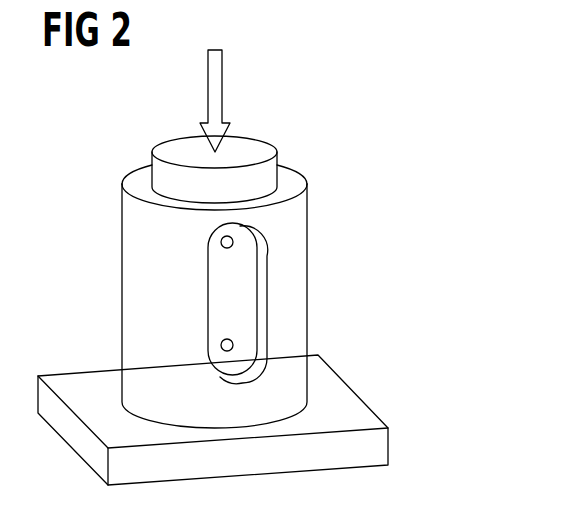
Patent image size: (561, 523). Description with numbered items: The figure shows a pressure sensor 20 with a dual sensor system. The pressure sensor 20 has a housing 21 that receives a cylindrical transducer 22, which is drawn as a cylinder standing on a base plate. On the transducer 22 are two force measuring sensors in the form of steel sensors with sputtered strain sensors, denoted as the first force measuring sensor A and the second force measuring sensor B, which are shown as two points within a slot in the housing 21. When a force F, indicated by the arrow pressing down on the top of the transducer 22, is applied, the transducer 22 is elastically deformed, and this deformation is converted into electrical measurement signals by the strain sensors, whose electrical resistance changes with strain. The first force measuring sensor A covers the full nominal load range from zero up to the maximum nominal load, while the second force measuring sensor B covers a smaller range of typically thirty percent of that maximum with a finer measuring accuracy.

The pressure sensor 20 is at (278, 268).
The housing 21 is at (260, 293).
The cylindrical transducer 22 is at (257, 175).
The force F is at (215, 90).
The first force measuring sensor A is at (220, 245).
The second force measuring sensor B is at (219, 348).